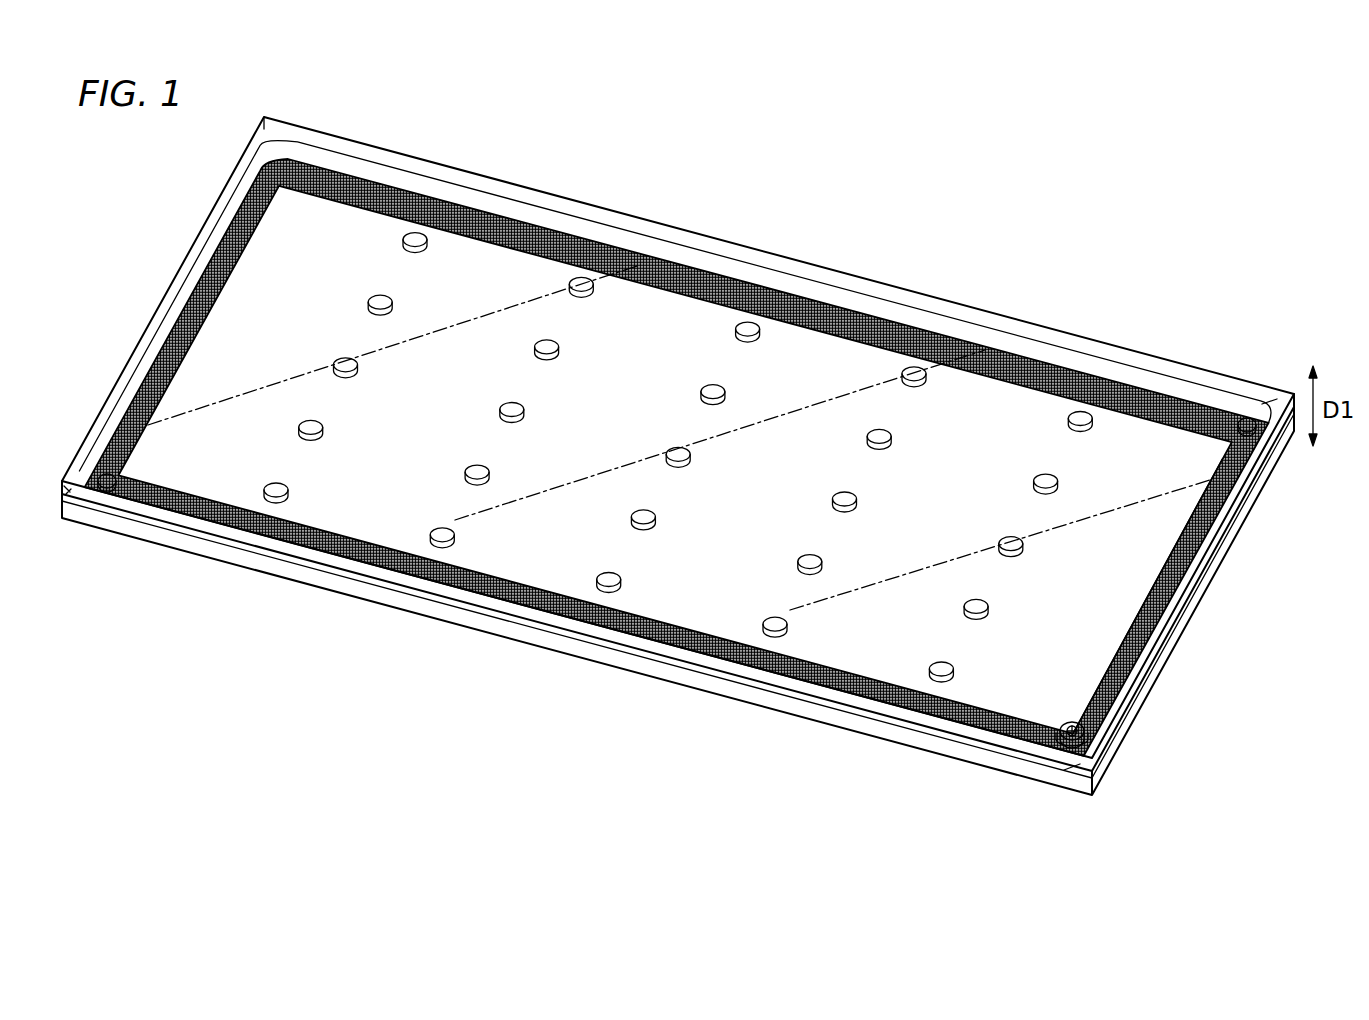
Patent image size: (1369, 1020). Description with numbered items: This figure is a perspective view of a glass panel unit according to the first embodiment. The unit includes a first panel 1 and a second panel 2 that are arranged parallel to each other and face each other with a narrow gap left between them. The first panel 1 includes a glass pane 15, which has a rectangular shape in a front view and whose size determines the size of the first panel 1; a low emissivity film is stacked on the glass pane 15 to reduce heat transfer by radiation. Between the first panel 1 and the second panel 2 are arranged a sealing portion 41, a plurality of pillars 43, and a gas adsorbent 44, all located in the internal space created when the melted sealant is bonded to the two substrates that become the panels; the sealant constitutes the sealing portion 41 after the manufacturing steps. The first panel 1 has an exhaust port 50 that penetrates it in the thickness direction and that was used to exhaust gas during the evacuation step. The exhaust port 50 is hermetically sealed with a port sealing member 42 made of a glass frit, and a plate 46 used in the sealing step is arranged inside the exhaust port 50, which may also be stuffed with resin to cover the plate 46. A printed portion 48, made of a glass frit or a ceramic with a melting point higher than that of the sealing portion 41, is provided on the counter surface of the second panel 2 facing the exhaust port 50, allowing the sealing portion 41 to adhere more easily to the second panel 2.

The first panel 1 is at (148, 515).
The second panel 2 is at (250, 565).
The glass pane 15 is at (370, 218).
The sealing portion 41 is at (428, 598).
The port sealing member 42 is at (1086, 745).
The pillars 43 is at (576, 283).
The gas adsorbent 44 is at (116, 481).
The plate 46 is at (1070, 724).
The printed portion 48 is at (1135, 619).
The exhaust port 50 is at (1062, 726).